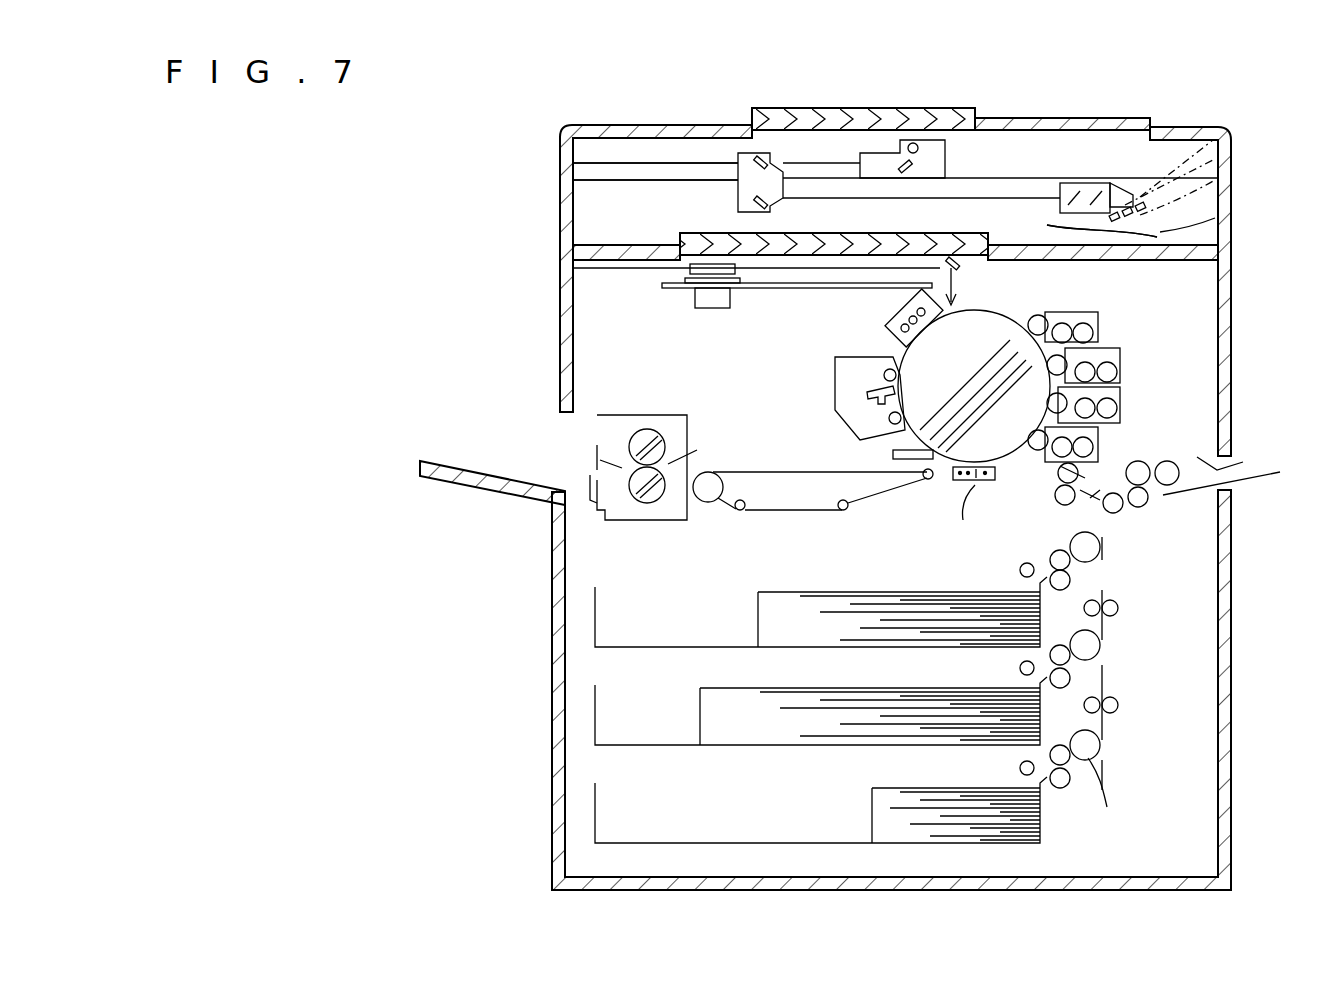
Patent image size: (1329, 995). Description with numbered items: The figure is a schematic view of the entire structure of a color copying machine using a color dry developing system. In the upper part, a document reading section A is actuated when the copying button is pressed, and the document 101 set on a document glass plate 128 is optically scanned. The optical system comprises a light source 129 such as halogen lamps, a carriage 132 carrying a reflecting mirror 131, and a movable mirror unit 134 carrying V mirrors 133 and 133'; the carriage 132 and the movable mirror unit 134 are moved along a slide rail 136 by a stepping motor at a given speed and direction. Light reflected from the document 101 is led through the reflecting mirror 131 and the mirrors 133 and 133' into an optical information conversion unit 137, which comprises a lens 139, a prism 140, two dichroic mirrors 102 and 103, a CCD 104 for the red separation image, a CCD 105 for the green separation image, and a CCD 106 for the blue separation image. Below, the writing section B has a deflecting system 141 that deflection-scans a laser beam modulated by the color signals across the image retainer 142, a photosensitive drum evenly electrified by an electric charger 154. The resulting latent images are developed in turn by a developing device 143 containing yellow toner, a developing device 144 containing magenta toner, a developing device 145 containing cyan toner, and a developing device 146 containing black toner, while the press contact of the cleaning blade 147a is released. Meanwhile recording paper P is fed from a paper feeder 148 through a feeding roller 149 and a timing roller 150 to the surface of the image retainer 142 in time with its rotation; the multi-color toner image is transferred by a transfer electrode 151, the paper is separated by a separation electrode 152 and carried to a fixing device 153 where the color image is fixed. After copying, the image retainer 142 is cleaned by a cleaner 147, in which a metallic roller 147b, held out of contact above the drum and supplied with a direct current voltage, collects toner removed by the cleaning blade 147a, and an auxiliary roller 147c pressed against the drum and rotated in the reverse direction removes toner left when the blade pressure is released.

The document reading section A is at (598, 127).
The writing section B is at (597, 288).
The recording paper P is at (1106, 795).
The document 101 is at (792, 108).
The dichroic mirror 102 is at (1122, 185).
The dichroic mirror 103 is at (1147, 202).
The CCD for imaging red separation image 104 is at (1208, 205).
The CCD for imaging green separation image 105 is at (1228, 168).
The CCD for imaging blue separation image 106 is at (1225, 219).
The document glass plate 128 is at (1125, 118).
The light source 129 is at (913, 143).
The reflecting mirror 131 is at (950, 172).
The carriage 132 is at (935, 158).
The V mirror 133 is at (724, 150).
The V mirror 133' is at (716, 202).
The movable mirror unit 134 is at (738, 165).
The slide rail 136 is at (603, 180).
The optical information conversion unit 137 is at (1047, 225).
The lens 139 is at (1080, 183).
The prism 140 is at (1205, 146).
The deflecting system 141 is at (673, 275).
The image retainer 142 is at (1003, 315).
The developing device 143 is at (1100, 322).
The developing device 144 is at (1122, 367).
The developing device 145 is at (1122, 402).
The developing device 146 is at (1100, 443).
The cleaner 147 is at (835, 367).
The cleaning blade 147a is at (867, 397).
The metallic roller 147b is at (890, 420).
The auxiliary roller 147c is at (886, 368).
The paper feeder 148 is at (538, 585).
The feeding roller 149 is at (1120, 784).
The timing roller 150 is at (1085, 495).
The transfer electrode 151 is at (968, 500).
The separation electrode 152 is at (963, 483).
The fixing device 153 is at (605, 522).
The electric charger 154 is at (897, 312).